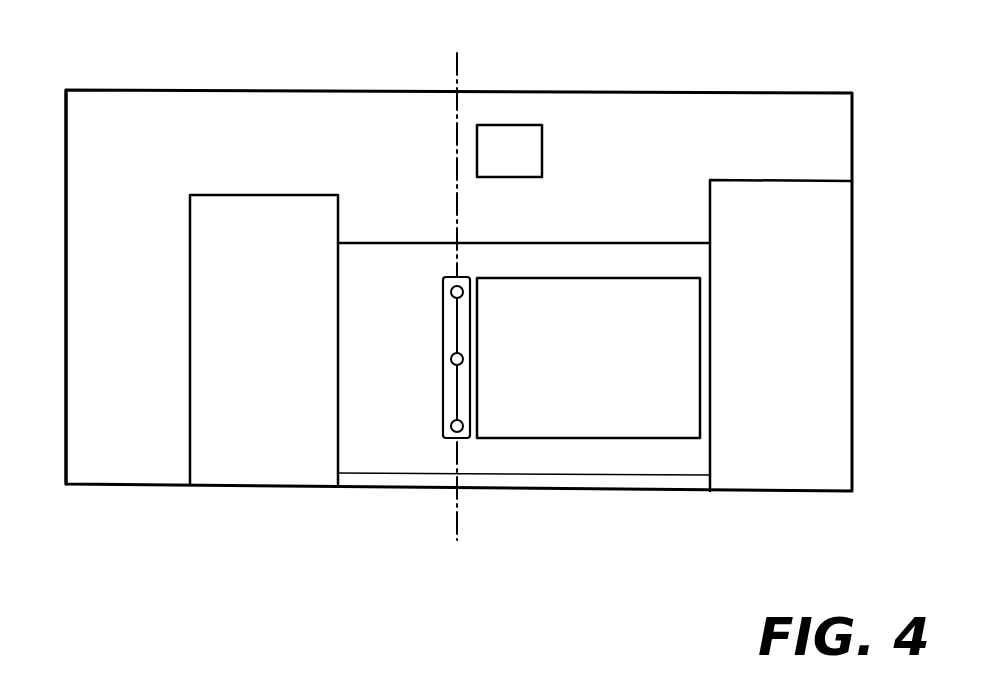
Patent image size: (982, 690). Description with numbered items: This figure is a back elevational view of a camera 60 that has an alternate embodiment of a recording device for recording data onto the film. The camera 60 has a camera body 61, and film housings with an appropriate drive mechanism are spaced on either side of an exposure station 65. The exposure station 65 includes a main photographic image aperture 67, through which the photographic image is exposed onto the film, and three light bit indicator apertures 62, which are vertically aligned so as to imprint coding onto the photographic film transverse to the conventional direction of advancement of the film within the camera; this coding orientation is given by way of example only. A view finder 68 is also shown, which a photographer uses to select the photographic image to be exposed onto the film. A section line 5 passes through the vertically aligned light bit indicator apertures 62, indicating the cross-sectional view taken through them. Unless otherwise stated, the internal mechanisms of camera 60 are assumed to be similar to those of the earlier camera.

The camera 60 is at (114, 70).
The camera body 61 is at (112, 278).
The light bit indicator apertures 62 is at (443, 367).
The exposure station 65 is at (445, 443).
The main photographic image aperture 67 is at (589, 364).
The view finder 68 is at (542, 160).
The section line 5- 5 is at (457, 53).